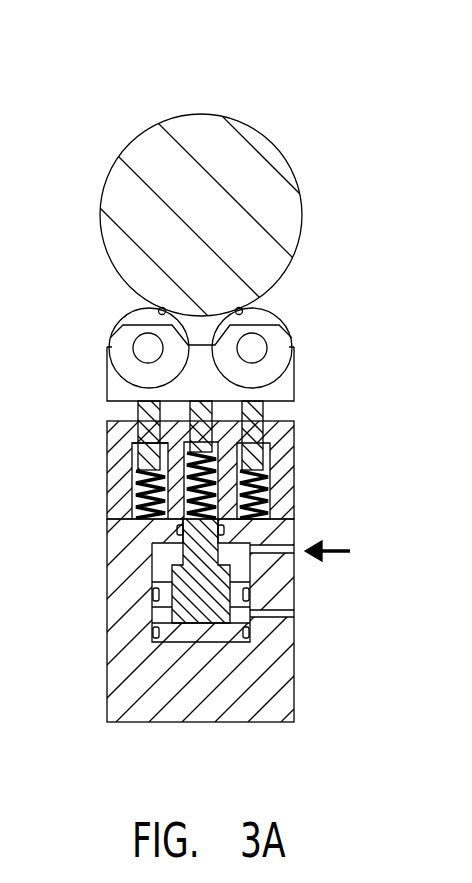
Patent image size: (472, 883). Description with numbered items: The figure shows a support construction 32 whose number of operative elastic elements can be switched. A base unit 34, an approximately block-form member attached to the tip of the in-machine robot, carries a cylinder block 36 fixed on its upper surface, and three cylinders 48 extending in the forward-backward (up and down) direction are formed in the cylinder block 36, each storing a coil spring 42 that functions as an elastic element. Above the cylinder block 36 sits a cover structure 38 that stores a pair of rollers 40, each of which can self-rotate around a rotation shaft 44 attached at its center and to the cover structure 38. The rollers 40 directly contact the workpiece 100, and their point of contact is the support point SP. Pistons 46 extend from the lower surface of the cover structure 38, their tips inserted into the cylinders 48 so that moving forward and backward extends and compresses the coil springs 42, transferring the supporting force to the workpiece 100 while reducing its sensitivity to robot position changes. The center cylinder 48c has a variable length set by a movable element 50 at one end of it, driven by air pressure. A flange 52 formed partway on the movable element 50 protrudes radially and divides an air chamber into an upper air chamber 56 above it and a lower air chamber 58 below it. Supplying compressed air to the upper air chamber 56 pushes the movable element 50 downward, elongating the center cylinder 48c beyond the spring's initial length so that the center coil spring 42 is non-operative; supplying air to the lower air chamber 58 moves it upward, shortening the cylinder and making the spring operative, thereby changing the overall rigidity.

The support construction 32 is at (169, 86).
The workpiece 100 is at (215, 128).
The support point SP is at (158, 310).
The roller 40 is at (277, 322).
The rotation shaft 44 is at (145, 350).
The cover structure 38 is at (287, 390).
The piston 46 is at (260, 415).
The center cylinder 48c is at (130, 466).
The cylinder 48 is at (148, 498).
The cylinder block 36 is at (288, 470).
The coil spring 42 is at (265, 512).
The base unit 34 is at (283, 683).
The flange 52 is at (252, 578).
The upper air chamber 56 is at (158, 563).
The lower air chamber 58 is at (158, 617).
The movable element 50 is at (205, 613).